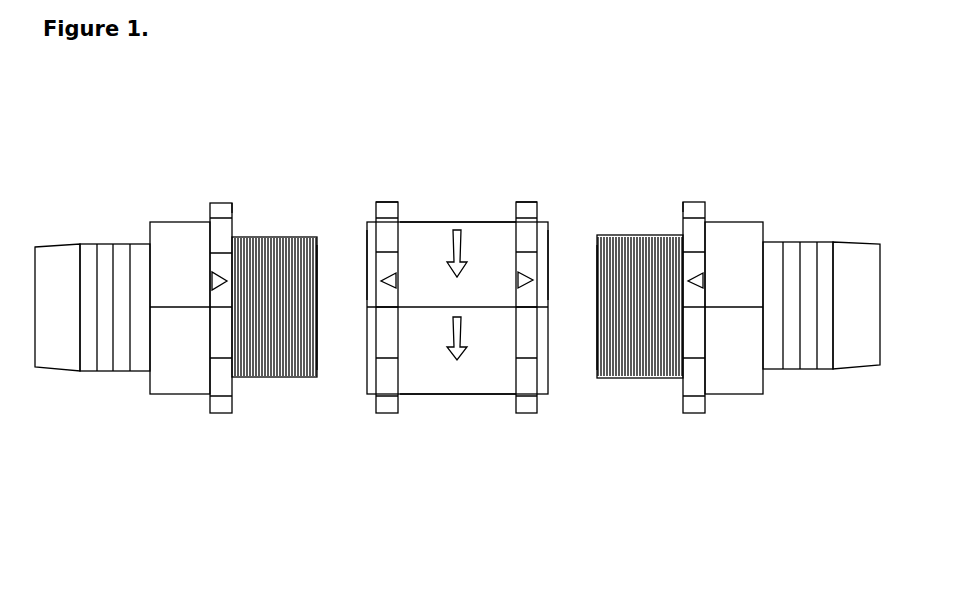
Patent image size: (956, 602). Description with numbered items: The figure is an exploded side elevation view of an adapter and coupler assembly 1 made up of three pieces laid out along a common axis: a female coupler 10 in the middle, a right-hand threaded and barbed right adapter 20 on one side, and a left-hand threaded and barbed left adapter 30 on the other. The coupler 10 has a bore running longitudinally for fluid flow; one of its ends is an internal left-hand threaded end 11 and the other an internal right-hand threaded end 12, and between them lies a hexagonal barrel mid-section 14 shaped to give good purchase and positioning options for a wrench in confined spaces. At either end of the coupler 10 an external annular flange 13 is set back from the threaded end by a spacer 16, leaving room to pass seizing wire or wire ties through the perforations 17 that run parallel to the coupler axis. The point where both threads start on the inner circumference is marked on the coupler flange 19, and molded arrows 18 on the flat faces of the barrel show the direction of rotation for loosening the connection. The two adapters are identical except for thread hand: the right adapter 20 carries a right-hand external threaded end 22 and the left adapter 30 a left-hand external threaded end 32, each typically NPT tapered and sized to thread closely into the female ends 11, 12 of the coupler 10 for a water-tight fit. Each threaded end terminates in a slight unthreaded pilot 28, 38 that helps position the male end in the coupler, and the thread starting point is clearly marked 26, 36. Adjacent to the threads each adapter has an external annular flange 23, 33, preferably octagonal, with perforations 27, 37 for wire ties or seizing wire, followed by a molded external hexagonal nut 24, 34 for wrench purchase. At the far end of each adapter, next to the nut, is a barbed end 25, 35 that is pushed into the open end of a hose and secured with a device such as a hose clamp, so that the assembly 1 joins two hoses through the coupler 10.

The adapter and coupler assembly 1 is at (457, 351).
The female coupler 10 is at (457, 324).
The internal left-hand threaded end 11 is at (550, 253).
The internal right-hand threaded end 12 is at (367, 253).
The external annular flange 13 is at (386, 202).
The hexagonal barrel mid-section 14 is at (456, 222).
The spacer 16 is at (367, 220).
The perforations 17 is at (375, 205).
The molded arrows 18 is at (445, 220).
The coupler flange mark 19 is at (385, 283).
The right adapter 20 is at (193, 319).
The right-hand external threaded end 22 is at (273, 237).
The external annular flange 23 is at (211, 273).
The external hexagonal nut 24 is at (210, 253).
The barbed end 25 is at (106, 244).
The thread starting point mark 26 is at (212, 268).
The perforations 27 is at (234, 203).
The pilot 28 is at (320, 268).
The left adapter 30 is at (719, 316).
The left-hand external threaded end 32 is at (640, 235).
The external annular flange 33 is at (692, 202).
The external hexagonal nut 34 is at (736, 222).
The barbed end 35 is at (812, 242).
The thread starting point mark 36 is at (705, 243).
The perforations 37 is at (683, 204).
The pilot 38 is at (595, 272).